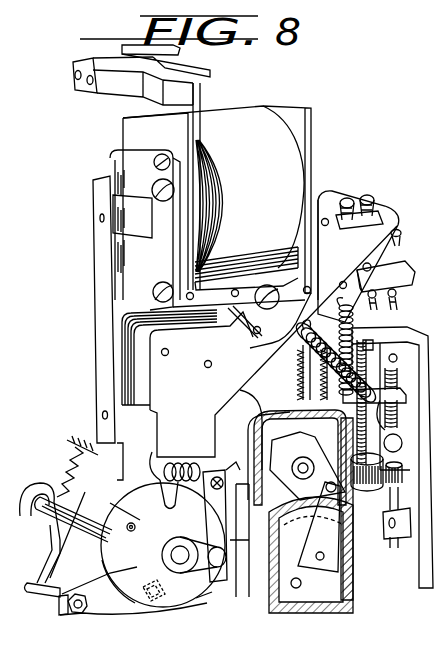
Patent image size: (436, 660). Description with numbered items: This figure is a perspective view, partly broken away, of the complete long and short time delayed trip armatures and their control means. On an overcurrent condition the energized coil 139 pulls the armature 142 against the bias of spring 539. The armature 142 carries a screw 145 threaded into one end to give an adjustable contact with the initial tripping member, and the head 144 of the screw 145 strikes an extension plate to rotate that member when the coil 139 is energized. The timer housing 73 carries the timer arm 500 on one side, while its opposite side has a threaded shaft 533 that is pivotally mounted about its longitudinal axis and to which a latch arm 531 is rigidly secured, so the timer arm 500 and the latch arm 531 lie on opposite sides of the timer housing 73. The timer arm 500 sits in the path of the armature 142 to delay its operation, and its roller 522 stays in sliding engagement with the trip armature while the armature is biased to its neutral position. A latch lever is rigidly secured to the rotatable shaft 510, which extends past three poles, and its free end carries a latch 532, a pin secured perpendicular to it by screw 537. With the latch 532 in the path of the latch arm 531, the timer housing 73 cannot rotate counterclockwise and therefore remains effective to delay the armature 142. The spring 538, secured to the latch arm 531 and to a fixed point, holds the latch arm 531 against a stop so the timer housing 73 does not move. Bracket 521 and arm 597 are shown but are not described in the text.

The coil 139 is at (243, 123).
The timer arm 500 is at (435, 110).
The head 144 is at (372, 198).
The screw 145 is at (401, 233).
The armature 142 is at (362, 253).
The bracket 521 is at (245, 340).
The spring 539 is at (312, 355).
The spring 538 is at (66, 446).
The threaded shaft 533 is at (90, 510).
The latch arm 531 is at (63, 548).
The roller 522 is at (180, 527).
The latch 532 is at (58, 613).
The screw 537 is at (88, 615).
The arm 597 is at (137, 618).
The shaft 510 is at (165, 608).
The timer housing 73 is at (212, 610).